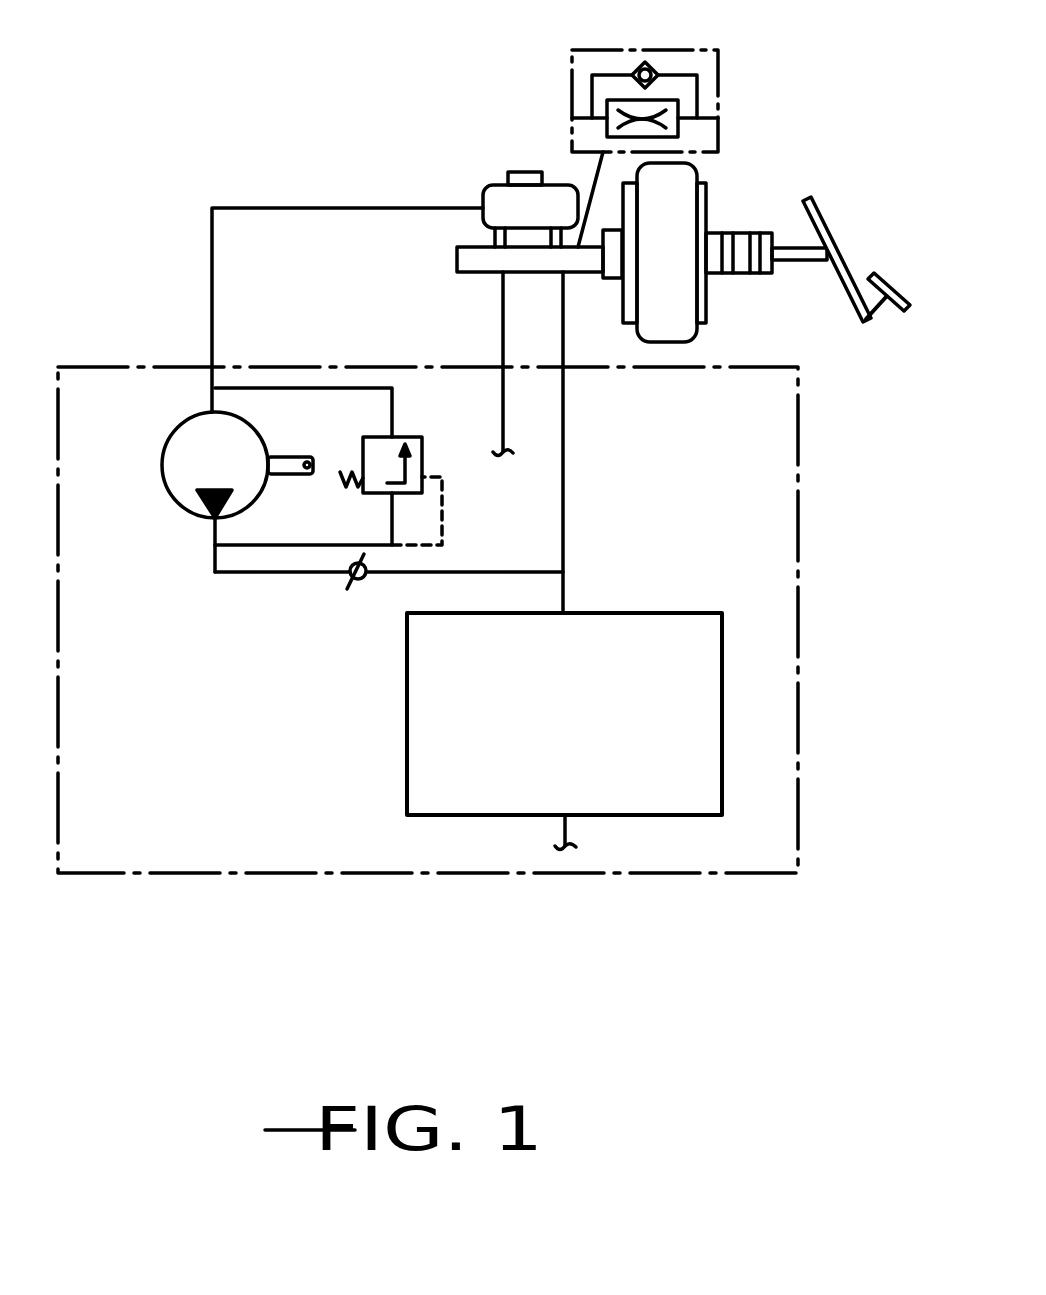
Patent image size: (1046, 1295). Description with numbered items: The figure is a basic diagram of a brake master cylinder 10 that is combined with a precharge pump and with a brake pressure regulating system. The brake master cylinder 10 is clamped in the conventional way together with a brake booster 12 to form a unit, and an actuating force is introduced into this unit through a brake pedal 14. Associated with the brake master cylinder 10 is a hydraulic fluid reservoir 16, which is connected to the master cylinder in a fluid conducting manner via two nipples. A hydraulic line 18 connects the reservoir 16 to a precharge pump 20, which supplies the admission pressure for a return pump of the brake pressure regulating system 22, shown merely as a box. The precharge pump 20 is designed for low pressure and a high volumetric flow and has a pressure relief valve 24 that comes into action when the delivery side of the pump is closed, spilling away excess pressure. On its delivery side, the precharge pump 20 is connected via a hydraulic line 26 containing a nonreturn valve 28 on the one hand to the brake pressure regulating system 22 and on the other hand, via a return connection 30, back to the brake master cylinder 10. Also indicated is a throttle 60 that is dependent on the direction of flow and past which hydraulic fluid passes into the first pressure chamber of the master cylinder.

The brake master cylinder 10 is at (468, 262).
The brake booster 12 is at (677, 212).
The brake pedal 14 is at (874, 323).
The hydraulic fluid reservoir 16 is at (492, 197).
The hydraulic line 18 is at (280, 210).
The precharge pump 20 is at (162, 473).
The brake pressure regulating system 22 is at (407, 772).
The pressure relief valve 24 is at (398, 446).
The hydraulic line 26 is at (487, 570).
The nonreturn valve 28 is at (352, 580).
The return connection 30 is at (557, 272).
The throttle 60 is at (604, 50).